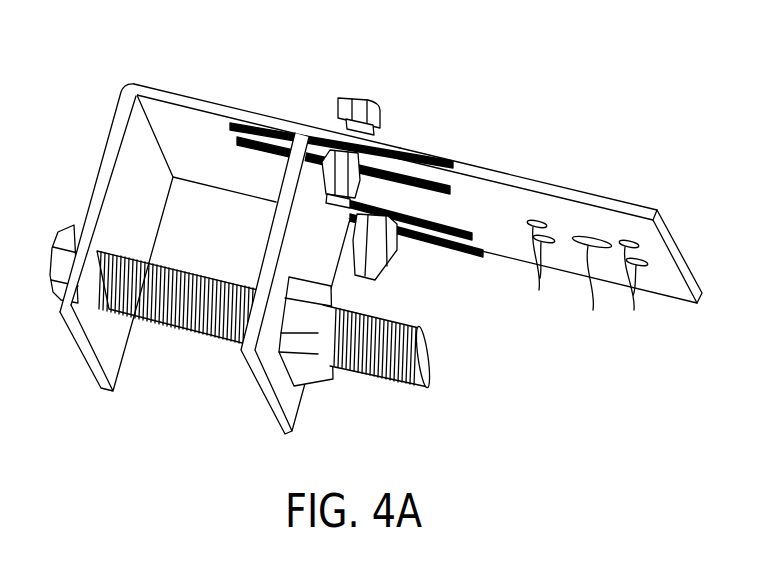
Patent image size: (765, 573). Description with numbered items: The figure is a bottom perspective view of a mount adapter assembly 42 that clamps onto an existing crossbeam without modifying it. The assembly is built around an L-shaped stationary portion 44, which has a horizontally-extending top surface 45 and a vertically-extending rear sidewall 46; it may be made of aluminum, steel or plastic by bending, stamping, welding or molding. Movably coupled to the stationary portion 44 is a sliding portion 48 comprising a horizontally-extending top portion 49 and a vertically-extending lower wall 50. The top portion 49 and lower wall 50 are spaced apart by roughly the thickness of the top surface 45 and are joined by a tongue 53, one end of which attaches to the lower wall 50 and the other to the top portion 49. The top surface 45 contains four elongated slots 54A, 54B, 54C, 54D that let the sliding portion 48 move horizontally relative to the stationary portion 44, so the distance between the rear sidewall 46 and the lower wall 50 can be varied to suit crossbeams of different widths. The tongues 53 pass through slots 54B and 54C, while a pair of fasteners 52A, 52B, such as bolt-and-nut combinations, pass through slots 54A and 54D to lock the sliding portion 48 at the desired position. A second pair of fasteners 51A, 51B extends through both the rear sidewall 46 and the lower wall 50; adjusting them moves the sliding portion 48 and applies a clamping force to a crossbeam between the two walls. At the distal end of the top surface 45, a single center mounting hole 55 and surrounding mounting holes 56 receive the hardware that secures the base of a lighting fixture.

The mount adapter assembly 42 is at (371, 219).
The L-shaped stationary portion 44 is at (236, 219).
The horizontally-extending top surface 45 is at (466, 223).
The vertically-extending rear sidewall 46 is at (125, 185).
The sliding portion 48 is at (307, 101).
The horizontally-extending top portion 49 is at (270, 100).
The vertically-extending lower wall 50 is at (296, 231).
The fastener 51A is at (207, 278).
The fastener 51B is at (190, 337).
The fastener 52A is at (357, 98).
The fastener 52B is at (377, 269).
The tongue 53 is at (320, 181).
The elongated slot 54A is at (428, 166).
The elongated slot 54B is at (450, 186).
The elongated slot 54C is at (426, 238).
The elongated slot 54D is at (469, 255).
The center mounting hole 55 is at (592, 291).
The surrounding mounting hole 56 is at (588, 284).